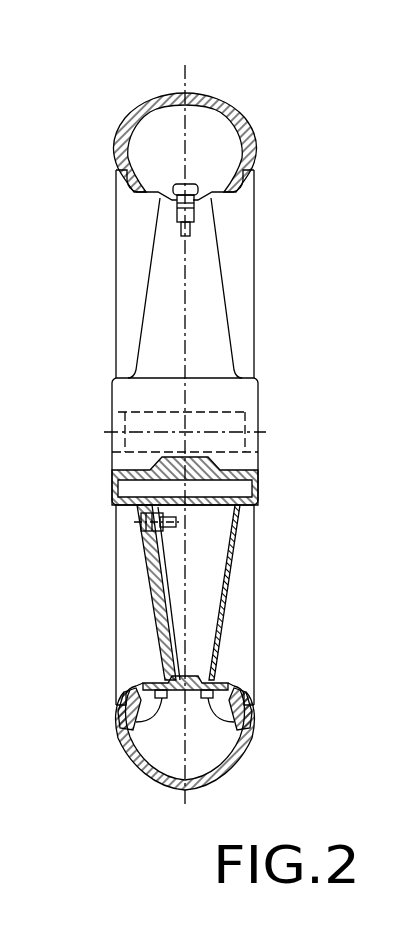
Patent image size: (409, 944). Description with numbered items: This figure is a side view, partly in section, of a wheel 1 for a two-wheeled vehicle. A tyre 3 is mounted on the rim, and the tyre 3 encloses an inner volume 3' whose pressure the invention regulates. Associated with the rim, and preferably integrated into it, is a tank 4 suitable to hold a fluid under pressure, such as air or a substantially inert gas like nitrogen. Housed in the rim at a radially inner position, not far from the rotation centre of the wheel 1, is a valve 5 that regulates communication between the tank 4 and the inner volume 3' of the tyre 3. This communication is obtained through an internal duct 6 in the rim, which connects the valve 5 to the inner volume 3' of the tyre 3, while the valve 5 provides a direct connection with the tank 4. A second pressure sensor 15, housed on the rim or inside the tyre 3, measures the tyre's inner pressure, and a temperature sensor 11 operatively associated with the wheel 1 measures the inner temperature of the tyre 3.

The wheel 1 is at (297, 422).
The tyre 3 is at (236, 740).
The inner volume of the tyre 3' is at (143, 735).
The tank 4 is at (205, 565).
The valve 5 is at (108, 520).
The internal duct 6 is at (162, 627).
The temperature sensor 11 is at (140, 722).
The second pressure sensor 15 is at (246, 726).